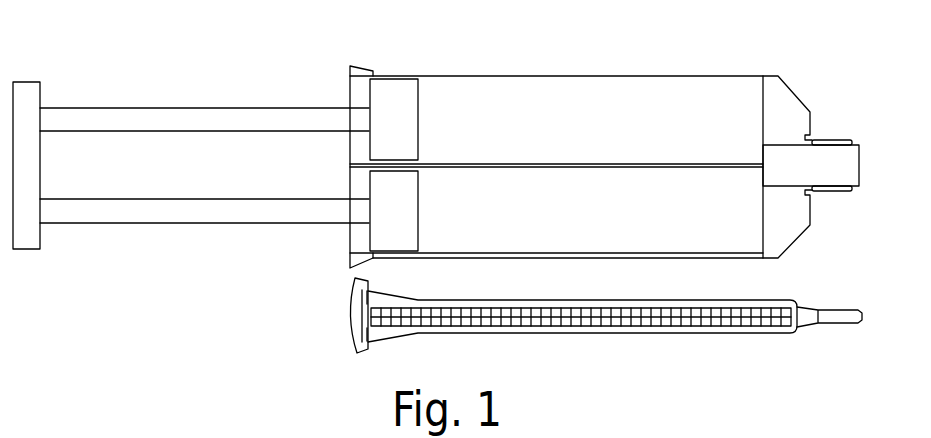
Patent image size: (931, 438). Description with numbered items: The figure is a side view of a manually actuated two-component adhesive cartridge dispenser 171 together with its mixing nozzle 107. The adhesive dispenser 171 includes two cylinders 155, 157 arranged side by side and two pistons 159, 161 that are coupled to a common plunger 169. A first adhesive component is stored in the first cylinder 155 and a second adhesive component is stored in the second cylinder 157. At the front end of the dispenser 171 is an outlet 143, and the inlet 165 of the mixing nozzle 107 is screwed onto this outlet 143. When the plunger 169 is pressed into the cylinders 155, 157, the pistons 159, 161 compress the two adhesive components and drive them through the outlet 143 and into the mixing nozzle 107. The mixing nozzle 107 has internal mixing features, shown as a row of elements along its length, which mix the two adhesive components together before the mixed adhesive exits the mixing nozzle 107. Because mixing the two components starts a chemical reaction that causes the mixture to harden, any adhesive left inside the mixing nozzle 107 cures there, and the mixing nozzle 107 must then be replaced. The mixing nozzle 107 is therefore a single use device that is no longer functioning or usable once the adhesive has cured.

The mixing nozzle 107 is at (620, 328).
The outlet 143 is at (837, 142).
The first cylinder 155 is at (570, 97).
The second cylinder 157 is at (555, 232).
The first piston 159 is at (402, 92).
The second piston 161 is at (403, 225).
The inlet 165 is at (357, 330).
The plunger 169 is at (173, 122).
The two-component adhesive cartridge dispenser 171 is at (325, 73).